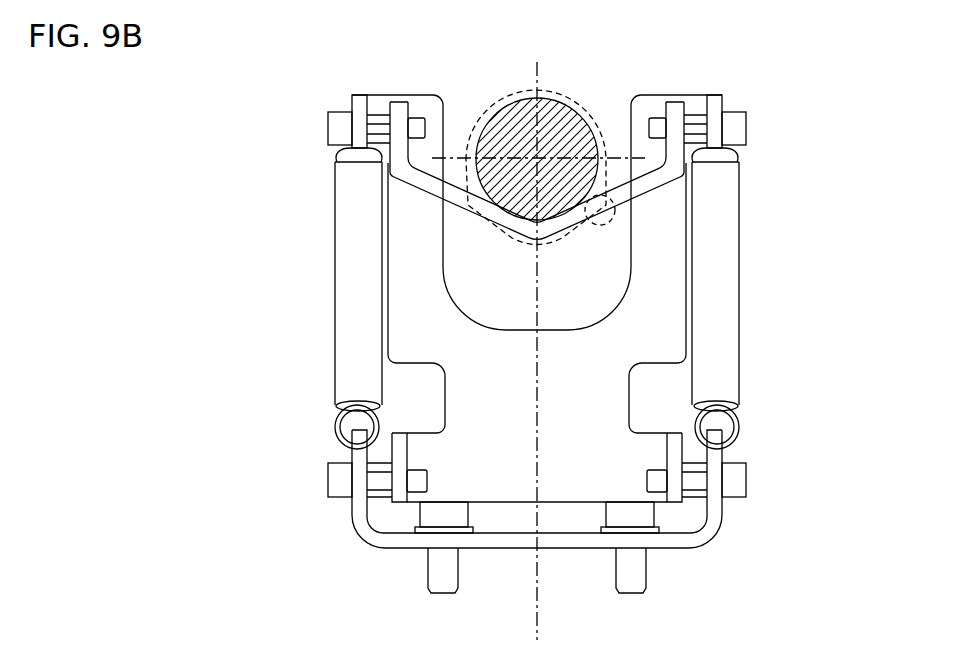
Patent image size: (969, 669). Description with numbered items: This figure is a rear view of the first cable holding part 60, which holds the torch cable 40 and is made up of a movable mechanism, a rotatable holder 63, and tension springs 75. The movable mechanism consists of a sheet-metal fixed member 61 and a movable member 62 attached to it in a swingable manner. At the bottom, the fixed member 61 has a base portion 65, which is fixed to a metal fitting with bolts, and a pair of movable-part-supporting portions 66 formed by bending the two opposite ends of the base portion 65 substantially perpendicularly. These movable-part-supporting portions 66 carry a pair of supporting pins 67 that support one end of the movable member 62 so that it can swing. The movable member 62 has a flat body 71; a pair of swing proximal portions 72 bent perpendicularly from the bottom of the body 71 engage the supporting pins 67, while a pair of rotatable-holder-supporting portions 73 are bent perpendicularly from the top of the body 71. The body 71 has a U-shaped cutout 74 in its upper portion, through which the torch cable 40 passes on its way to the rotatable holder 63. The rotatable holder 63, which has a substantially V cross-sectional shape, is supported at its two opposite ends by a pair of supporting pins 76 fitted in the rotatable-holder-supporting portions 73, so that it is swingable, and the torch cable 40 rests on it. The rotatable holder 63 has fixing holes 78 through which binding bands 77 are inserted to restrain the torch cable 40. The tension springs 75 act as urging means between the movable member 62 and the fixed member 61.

The torch cable 40 is at (513, 118).
The cable holding part 60 is at (748, 81).
The fixed member 61 is at (567, 554).
The movable member 62 is at (690, 312).
The rotatable holder 63 is at (648, 161).
The base portion 65 is at (664, 545).
The movable-part-supporting portions 66 is at (713, 452).
The supporting pins 67 is at (338, 478).
The body 71 is at (498, 483).
The swing proximal portions 72 is at (402, 448).
The rotatable-holder-supporting portions 73 is at (355, 103).
The U-shaped cutout 74 is at (448, 270).
The tension springs 75 is at (340, 315).
The supporting pins 76 is at (338, 125).
The binding bands 77 is at (487, 110).
The fixing holes 78 is at (597, 226).